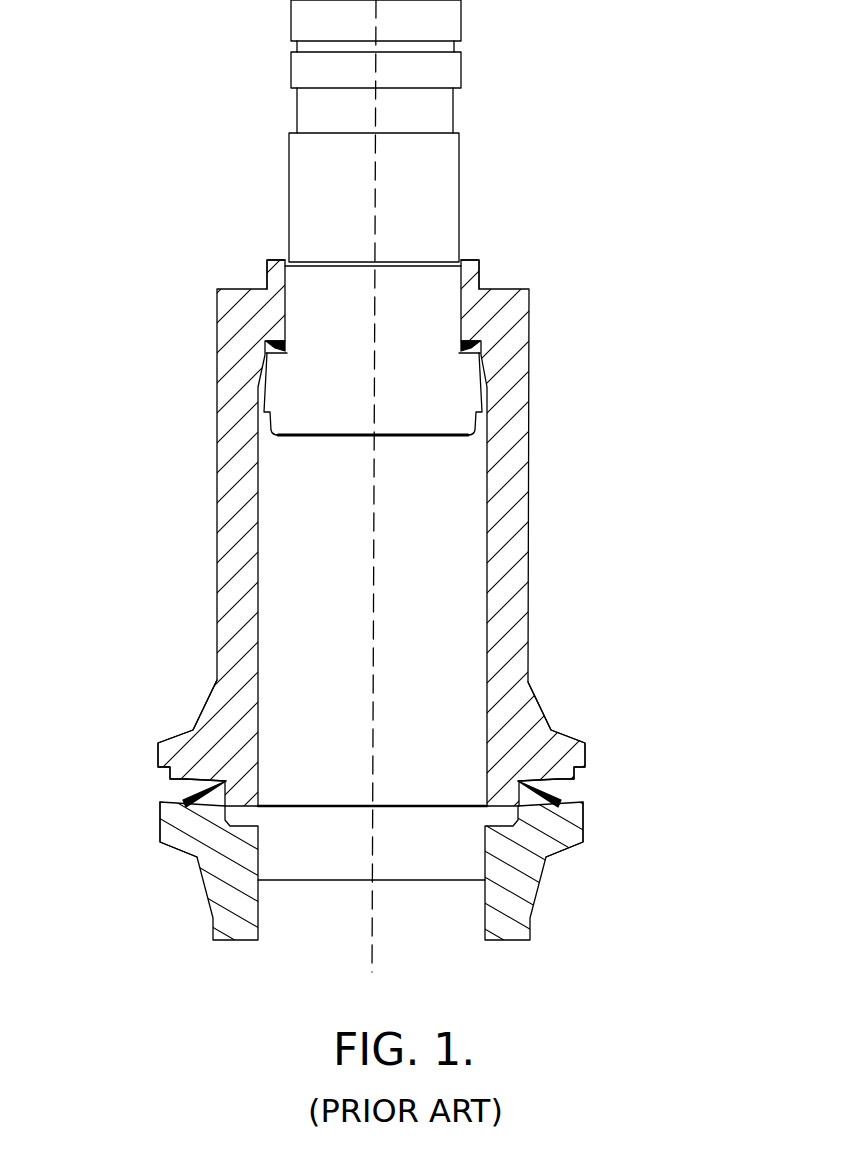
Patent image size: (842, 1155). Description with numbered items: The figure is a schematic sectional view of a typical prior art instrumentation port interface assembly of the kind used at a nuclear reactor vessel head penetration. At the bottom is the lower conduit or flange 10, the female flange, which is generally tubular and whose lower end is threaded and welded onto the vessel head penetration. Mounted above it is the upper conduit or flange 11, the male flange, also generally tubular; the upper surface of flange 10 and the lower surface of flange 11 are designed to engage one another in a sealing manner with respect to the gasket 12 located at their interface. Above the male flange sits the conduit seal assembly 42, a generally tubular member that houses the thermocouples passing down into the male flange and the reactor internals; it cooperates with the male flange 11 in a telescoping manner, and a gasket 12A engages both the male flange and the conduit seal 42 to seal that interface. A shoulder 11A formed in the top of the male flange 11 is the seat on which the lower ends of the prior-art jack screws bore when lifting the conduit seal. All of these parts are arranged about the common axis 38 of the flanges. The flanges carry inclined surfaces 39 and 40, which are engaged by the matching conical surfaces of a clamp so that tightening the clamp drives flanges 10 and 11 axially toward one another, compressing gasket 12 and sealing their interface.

The lower conduit or flange 10 is at (213, 932).
The upper conduit or flange 11 is at (216, 485).
The shoulder 11A is at (267, 265).
The gasket 12 is at (185, 800).
The gasket 12A is at (287, 349).
The axis 38 is at (372, 953).
The surface 39 is at (180, 741).
The surface 40 is at (160, 843).
The conduit seal assembly 42 is at (462, 57).